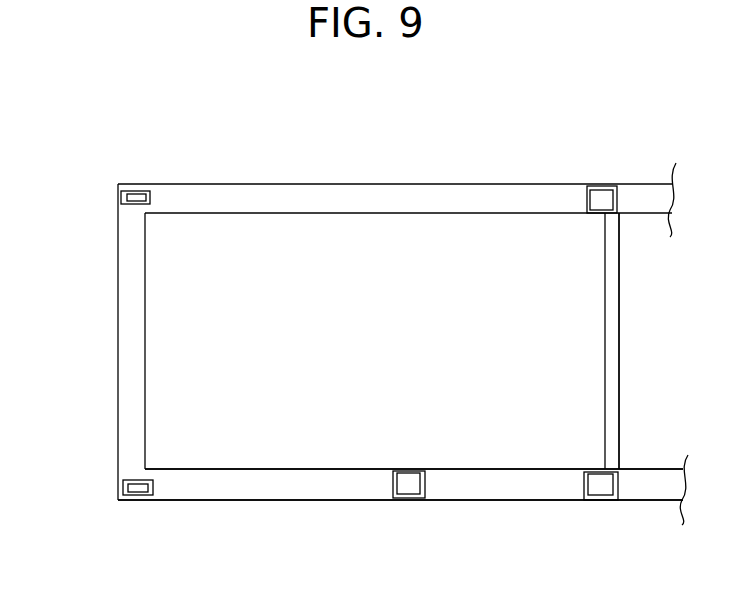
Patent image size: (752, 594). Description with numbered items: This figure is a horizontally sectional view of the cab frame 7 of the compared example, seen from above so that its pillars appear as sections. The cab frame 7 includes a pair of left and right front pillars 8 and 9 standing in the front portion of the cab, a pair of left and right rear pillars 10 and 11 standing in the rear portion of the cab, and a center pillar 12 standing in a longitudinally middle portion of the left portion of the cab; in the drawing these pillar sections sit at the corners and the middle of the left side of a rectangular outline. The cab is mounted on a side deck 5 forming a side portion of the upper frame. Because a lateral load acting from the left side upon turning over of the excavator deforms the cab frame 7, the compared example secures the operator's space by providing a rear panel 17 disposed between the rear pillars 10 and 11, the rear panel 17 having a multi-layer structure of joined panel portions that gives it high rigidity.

The side deck 5 is at (292, 501).
The cab frame 7 is at (115, 370).
The left front pillar 8 is at (136, 500).
The right front pillar 9 is at (135, 187).
The left rear pillar 10 is at (603, 501).
The right rear pillar 11 is at (600, 186).
The center pillar 12 is at (405, 499).
The rear panel 17 is at (620, 363).